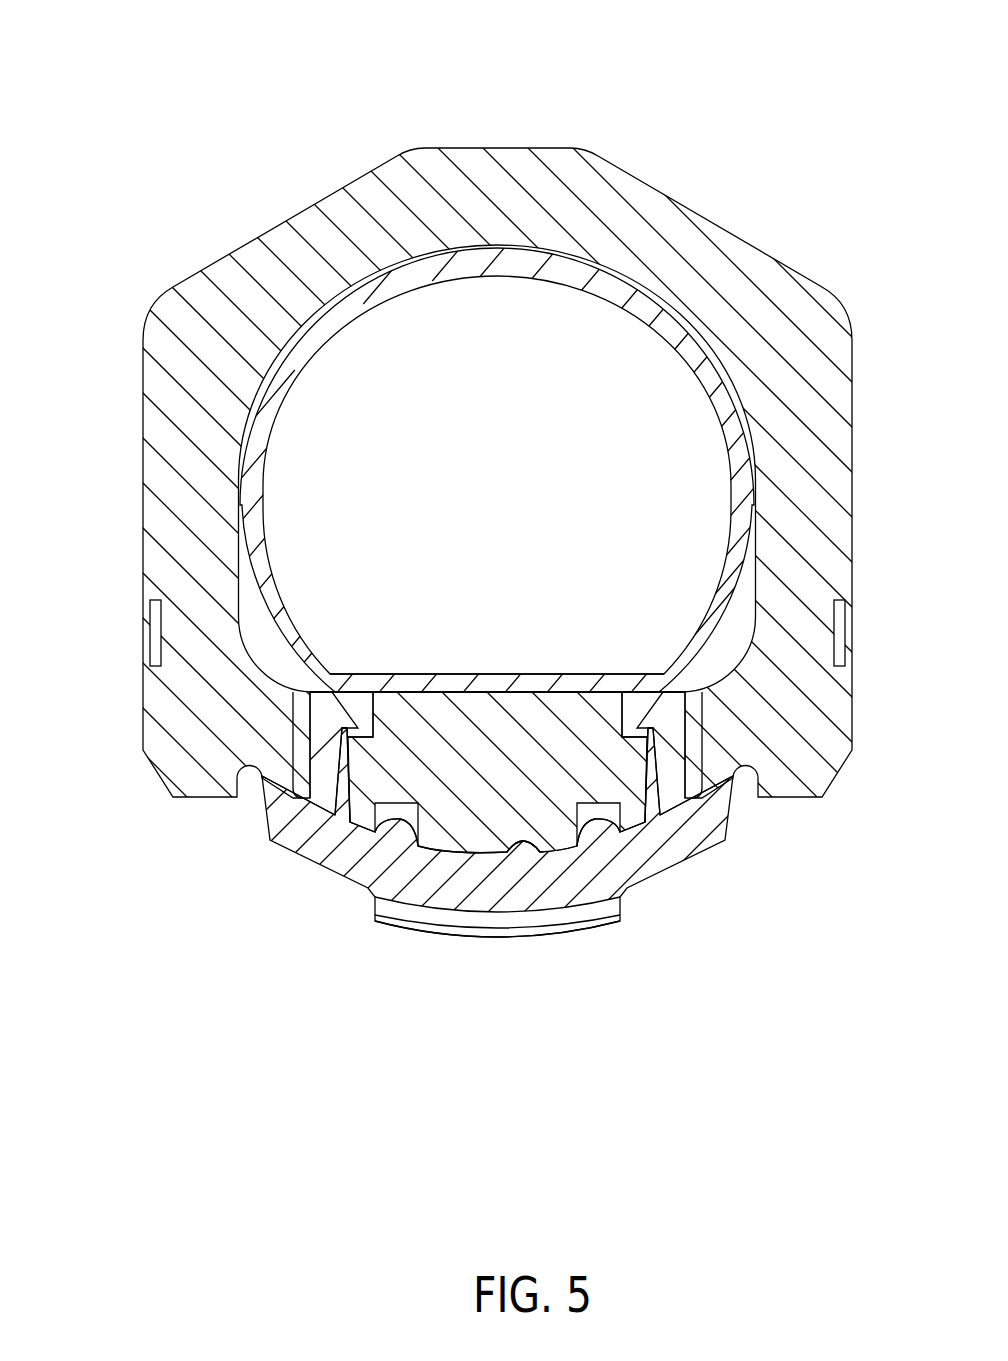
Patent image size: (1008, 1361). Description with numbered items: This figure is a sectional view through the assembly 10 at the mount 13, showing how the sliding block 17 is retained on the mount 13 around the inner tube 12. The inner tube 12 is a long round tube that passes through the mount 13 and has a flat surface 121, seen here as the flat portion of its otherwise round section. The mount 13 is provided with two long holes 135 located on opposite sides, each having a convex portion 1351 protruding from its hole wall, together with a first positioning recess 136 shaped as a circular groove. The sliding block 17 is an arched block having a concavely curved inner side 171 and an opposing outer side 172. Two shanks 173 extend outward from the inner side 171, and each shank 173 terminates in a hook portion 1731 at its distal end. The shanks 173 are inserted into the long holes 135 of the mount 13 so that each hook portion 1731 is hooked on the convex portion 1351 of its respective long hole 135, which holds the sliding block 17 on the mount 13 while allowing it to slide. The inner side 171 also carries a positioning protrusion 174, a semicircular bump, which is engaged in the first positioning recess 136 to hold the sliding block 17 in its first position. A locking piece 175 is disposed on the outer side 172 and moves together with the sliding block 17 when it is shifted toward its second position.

The assembly 10 is at (795, 80).
The inner tube 12 is at (618, 293).
The mount 13 is at (796, 265).
The flat surface 121 is at (397, 683).
The long hole 135 is at (297, 735).
The convex portion 1351 is at (360, 742).
The first positioning recess 136 is at (338, 790).
The sliding block 17 is at (672, 873).
The inner side 171 is at (545, 855).
The outer side 172 is at (478, 912).
The shank 173 is at (670, 780).
The hook portion 1731 is at (650, 723).
The positioning protrusion 174 is at (398, 832).
The locking piece 175 is at (548, 937).